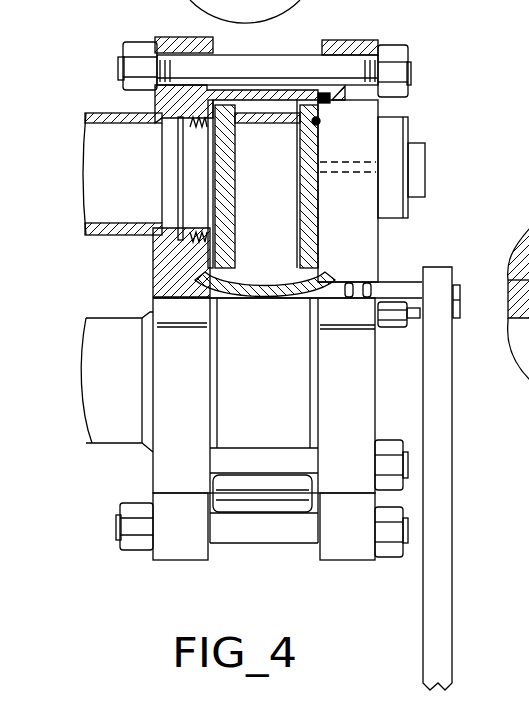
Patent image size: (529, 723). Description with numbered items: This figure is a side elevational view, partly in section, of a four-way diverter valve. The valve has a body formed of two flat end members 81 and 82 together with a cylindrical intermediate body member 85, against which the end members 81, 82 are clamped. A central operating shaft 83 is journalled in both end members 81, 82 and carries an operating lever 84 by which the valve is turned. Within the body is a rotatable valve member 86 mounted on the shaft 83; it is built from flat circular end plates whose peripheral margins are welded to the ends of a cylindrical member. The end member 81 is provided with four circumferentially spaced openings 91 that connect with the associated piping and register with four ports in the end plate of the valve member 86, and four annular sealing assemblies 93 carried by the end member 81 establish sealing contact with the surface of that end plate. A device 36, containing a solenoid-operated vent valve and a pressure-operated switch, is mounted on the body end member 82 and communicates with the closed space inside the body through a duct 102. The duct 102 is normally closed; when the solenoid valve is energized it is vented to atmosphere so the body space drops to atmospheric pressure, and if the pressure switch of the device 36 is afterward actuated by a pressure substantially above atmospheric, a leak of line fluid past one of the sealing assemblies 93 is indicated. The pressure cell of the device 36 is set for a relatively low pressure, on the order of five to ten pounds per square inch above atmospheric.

The cylindrical intermediate body member 85 is at (252, 88).
The device 36 is at (421, 126).
The annular sealing assemblies 93 is at (203, 170).
The circumferentially spaced openings 91 is at (173, 200).
The duct 102 is at (343, 175).
The rotatable valve member 86 is at (267, 246).
The central operating shaft 83 is at (417, 320).
The flat end member 81 is at (195, 562).
The flat end member 82 is at (353, 562).
The operating lever 84 is at (450, 587).